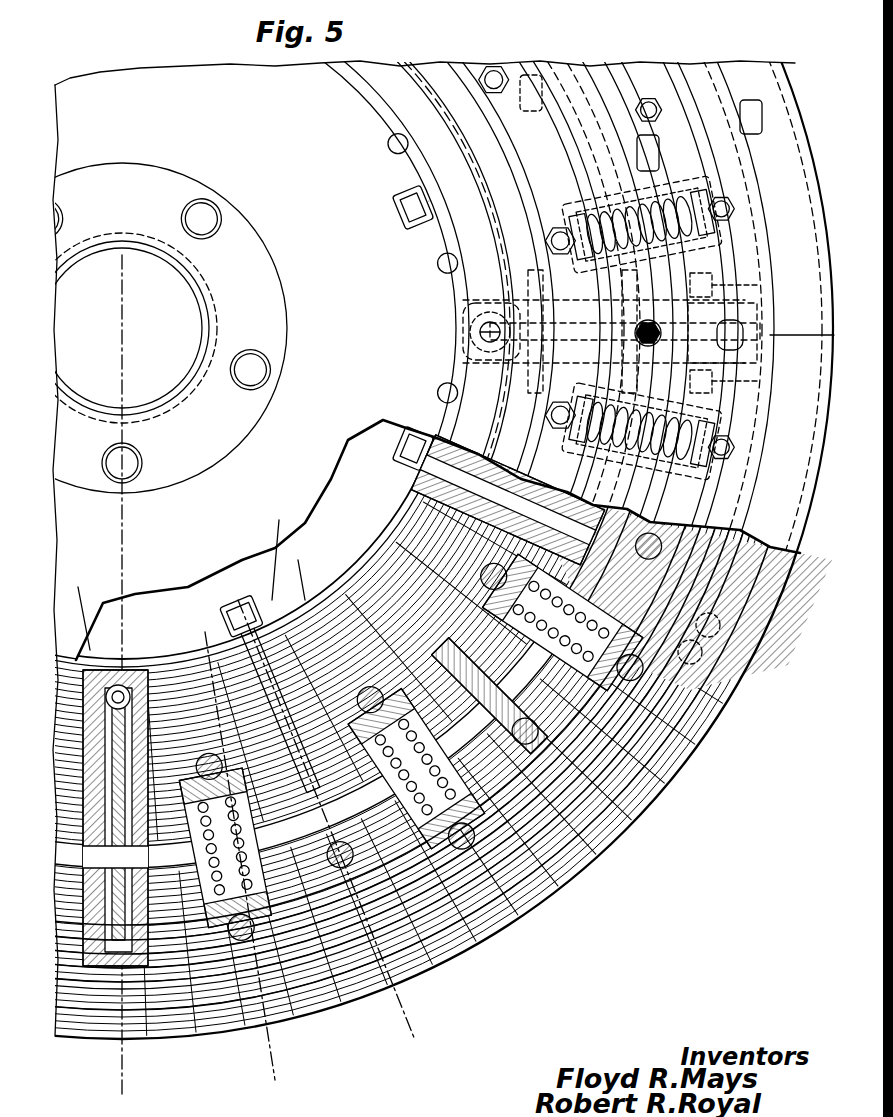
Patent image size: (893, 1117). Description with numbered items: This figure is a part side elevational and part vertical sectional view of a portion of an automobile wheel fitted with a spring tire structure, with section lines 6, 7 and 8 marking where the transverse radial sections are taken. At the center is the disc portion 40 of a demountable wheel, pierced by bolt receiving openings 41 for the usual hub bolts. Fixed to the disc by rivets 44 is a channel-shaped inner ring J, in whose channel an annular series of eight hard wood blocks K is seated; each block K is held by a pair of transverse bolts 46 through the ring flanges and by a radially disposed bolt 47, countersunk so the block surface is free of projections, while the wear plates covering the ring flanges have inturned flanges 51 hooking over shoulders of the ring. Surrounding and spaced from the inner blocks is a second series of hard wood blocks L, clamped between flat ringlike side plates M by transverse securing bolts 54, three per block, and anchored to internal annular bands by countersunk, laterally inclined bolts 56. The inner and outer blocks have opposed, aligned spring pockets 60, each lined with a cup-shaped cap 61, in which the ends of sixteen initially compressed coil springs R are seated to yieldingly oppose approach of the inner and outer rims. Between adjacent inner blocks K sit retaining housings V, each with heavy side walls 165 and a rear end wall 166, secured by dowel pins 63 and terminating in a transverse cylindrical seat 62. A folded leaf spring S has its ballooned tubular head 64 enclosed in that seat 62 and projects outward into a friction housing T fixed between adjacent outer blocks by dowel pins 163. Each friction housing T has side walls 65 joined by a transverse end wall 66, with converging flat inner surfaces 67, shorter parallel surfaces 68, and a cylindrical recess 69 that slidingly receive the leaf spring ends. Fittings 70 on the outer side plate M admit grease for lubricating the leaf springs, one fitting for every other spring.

The disc portion 40 is at (172, 76).
The bolt receiving openings 41 is at (193, 232).
The rivets 44 is at (395, 152).
The transverse bolts 46 is at (484, 72).
The radially disposed bolt 47 is at (405, 215).
The inturned flanges 51 is at (458, 243).
The transverse securing bolts 54 is at (652, 98).
The bolts 56 is at (720, 622).
The spring pockets 60 is at (222, 1002).
The cup-shaped cap 61 is at (522, 612).
The transverse cylindrical seat 62 is at (112, 686).
The dowel pins 63 is at (72, 660).
The enlarged head 64 is at (118, 656).
The side walls 65 is at (582, 705).
The transverse end wall 66 is at (572, 762).
The flat inner opposed surfaces 67 is at (622, 722).
The parallel flat surfaces 68 is at (562, 812).
The enlarged recess 69 is at (587, 742).
The fittings 70 is at (658, 343).
The dowel pins 163 is at (740, 292).
The side walls 165 is at (463, 300).
The rear end wall 166 is at (468, 327).
The inner ring J is at (278, 545).
The inner hard wood blocks K is at (575, 678).
The outer hard wood blocks L is at (800, 122).
The side plates M is at (762, 191).
The coil springs R is at (422, 853).
The leaf springs S is at (345, 575).
The friction housings T is at (150, 1000).
The retaining housings V is at (183, 594).
The section line 6— 6 is at (150, 298).
The section line 7— 7 is at (238, 596).
The section line 8— 8 is at (192, 629).